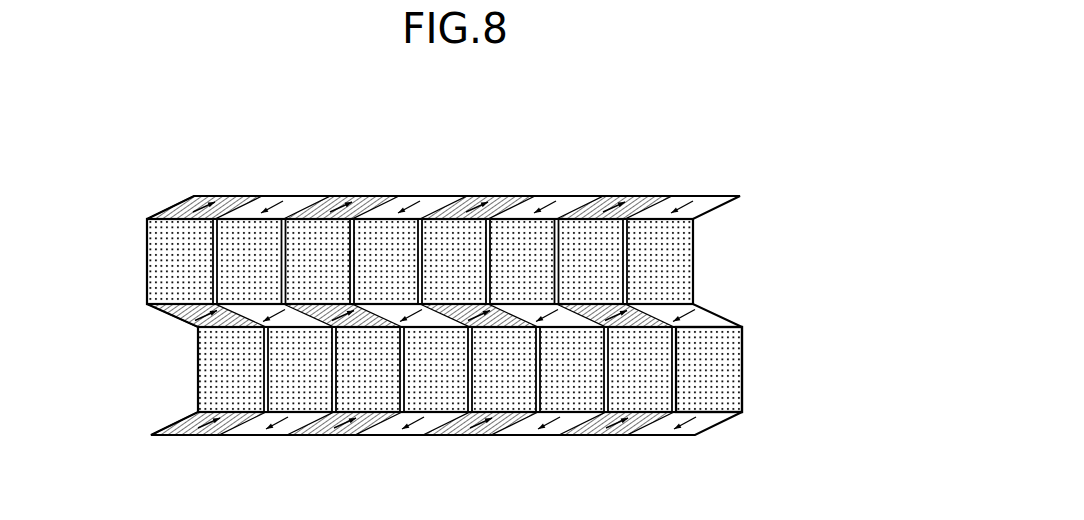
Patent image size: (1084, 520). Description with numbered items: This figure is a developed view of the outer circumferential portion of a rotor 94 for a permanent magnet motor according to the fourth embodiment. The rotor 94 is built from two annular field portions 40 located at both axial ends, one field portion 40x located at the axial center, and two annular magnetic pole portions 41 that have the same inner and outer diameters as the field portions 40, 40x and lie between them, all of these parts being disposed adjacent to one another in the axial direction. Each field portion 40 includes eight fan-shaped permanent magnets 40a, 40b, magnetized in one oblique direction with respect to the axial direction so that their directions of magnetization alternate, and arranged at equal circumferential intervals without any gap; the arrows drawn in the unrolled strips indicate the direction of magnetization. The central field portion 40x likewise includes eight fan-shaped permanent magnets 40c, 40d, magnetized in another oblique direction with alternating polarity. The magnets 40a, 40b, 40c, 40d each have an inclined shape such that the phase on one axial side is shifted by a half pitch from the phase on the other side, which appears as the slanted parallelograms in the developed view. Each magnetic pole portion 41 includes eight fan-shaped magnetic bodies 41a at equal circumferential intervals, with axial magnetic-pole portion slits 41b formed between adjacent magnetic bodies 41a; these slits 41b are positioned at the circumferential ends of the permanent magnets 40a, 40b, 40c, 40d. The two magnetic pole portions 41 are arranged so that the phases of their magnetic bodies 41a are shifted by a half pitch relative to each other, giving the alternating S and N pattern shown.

The field portion 40 is at (421, 317).
The permanent magnet 40a is at (392, 197).
The permanent magnet 40b is at (352, 197).
The permanent magnet 40c is at (425, 318).
The permanent magnet 40d is at (316, 318).
The field portion 40x is at (417, 235).
The magnetic pole portion 41 is at (421, 355).
The fan-shaped magnetic body 41a is at (724, 402).
The magnetic-pole portion slit 41b is at (470, 413).
The rotor 94 is at (762, 115).